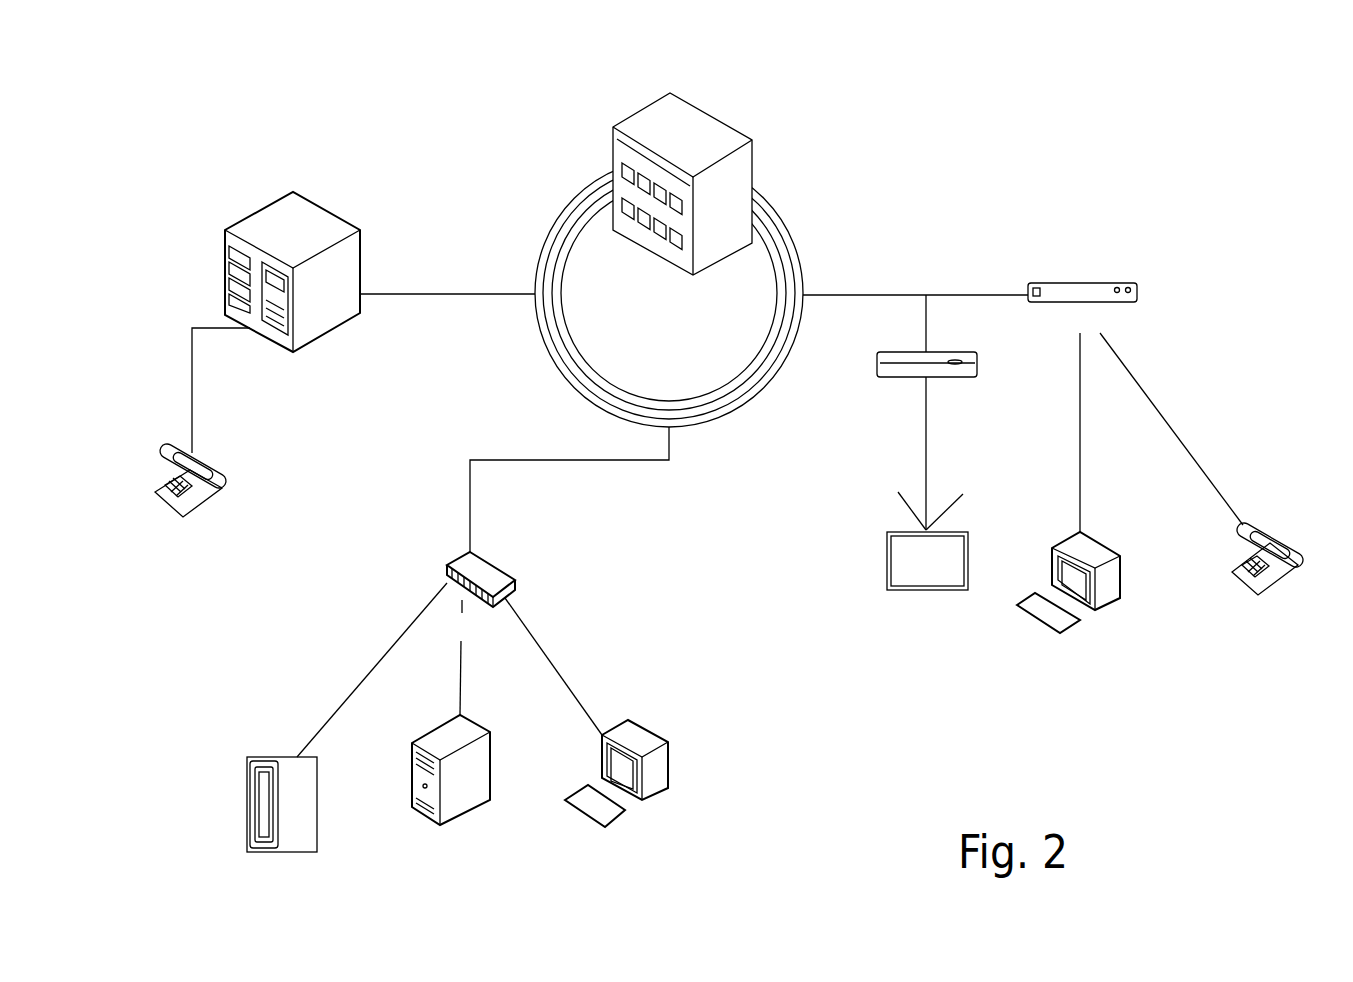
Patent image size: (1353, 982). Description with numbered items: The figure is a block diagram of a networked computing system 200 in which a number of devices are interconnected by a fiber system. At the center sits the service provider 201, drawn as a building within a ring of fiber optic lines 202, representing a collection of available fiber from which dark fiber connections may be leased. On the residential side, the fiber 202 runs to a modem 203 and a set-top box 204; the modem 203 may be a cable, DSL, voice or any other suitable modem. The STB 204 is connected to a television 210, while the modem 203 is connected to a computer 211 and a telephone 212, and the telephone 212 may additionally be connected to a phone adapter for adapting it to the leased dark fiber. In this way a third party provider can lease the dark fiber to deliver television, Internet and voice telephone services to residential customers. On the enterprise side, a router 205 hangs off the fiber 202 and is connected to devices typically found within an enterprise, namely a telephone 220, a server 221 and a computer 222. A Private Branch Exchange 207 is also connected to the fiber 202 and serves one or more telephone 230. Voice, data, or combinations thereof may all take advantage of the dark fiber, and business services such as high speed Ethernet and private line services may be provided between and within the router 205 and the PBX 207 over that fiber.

The system 200 is at (1200, 97).
The service provider 201 is at (725, 72).
The fiber optic lines 202 is at (793, 252).
The modem 203 is at (1108, 283).
The set-top box 204 is at (880, 352).
The router 205 is at (517, 575).
The Private Branch Exchange 207 is at (296, 190).
The television 210 is at (887, 586).
The computer 211 is at (1095, 612).
The telephone 212 is at (1245, 590).
The telephone 220 is at (247, 775).
The server 221 is at (412, 807).
The computer 222 is at (668, 742).
The telephone 230 is at (212, 455).